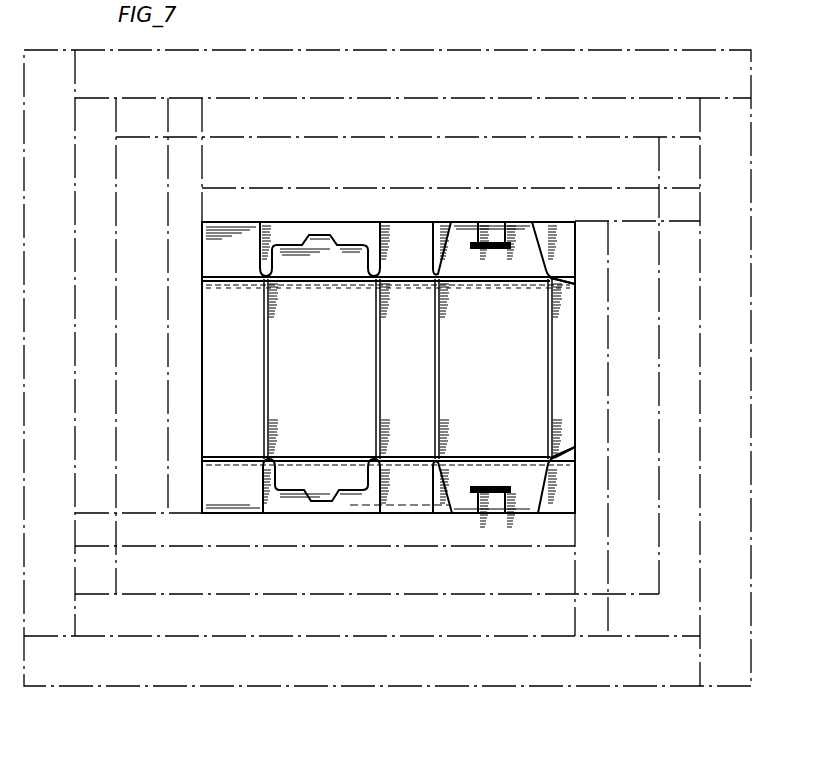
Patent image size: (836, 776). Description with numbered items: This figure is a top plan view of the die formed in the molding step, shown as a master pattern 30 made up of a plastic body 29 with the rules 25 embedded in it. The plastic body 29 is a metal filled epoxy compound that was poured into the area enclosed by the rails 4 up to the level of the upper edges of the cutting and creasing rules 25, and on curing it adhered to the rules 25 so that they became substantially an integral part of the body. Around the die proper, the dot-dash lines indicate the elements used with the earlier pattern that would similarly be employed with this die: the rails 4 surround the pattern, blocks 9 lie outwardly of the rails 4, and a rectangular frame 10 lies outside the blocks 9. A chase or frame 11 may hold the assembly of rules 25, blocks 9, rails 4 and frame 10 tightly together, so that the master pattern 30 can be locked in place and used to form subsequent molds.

The rails 4 is at (578, 187).
The blocks 9 is at (659, 348).
The rectangular frame 10 is at (700, 256).
The chase 11 is at (751, 338).
The rules 25 is at (434, 357).
The plastic body 29 is at (500, 421).
The master pattern 30 is at (423, 374).